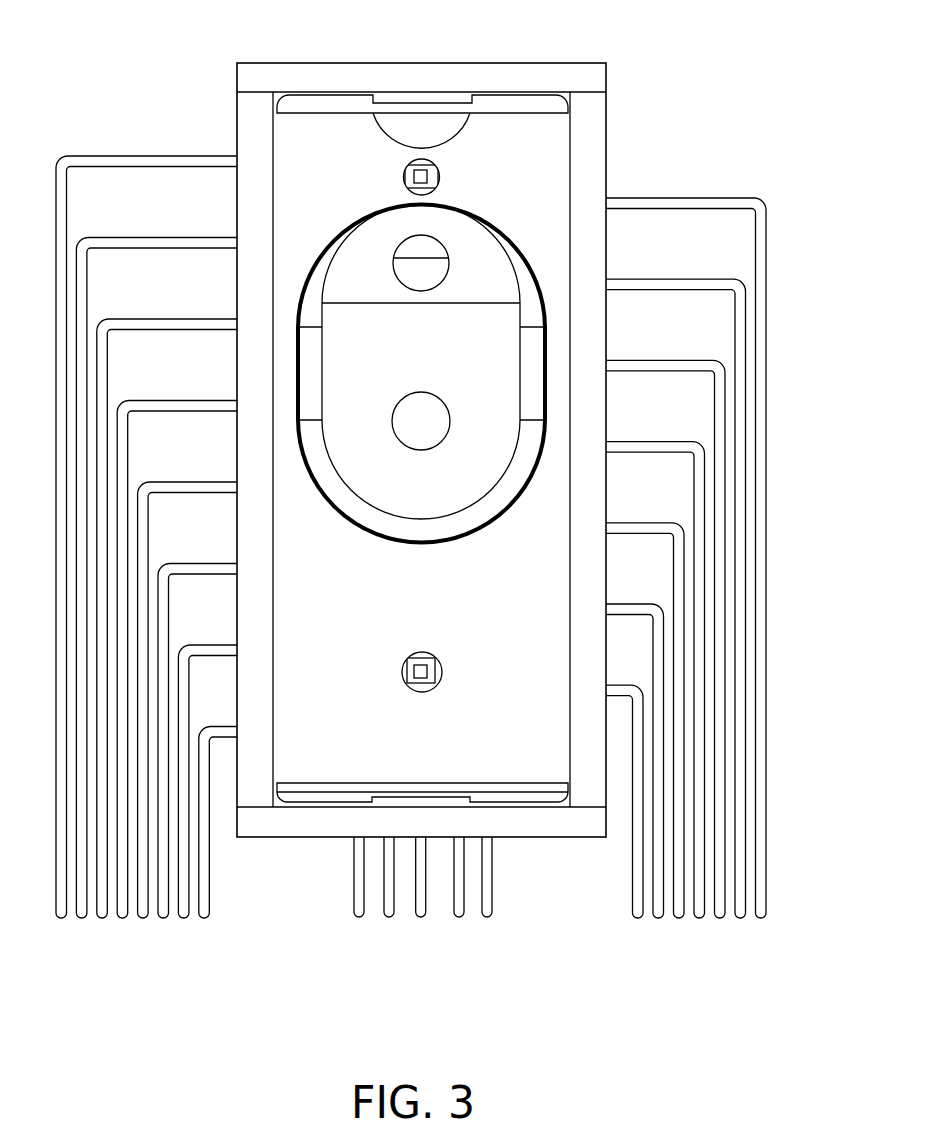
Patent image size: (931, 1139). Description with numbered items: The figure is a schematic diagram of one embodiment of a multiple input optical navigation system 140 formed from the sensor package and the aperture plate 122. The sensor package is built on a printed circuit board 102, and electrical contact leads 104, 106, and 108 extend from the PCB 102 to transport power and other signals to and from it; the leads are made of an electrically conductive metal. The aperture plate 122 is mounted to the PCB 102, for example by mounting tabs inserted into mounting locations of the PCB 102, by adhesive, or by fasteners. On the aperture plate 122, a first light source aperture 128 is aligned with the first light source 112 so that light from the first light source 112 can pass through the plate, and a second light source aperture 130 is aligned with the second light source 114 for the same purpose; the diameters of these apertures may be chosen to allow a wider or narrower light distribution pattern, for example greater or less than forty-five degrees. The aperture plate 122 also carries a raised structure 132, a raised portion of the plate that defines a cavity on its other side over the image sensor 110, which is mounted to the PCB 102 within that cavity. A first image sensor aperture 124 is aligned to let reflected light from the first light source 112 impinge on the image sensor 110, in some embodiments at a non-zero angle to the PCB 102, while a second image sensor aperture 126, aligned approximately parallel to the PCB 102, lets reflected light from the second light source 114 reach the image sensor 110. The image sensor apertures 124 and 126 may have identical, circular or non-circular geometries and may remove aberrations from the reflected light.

The printed circuit board 102 is at (598, 62).
The electrical contact lead 104 is at (97, 139).
The electrical contact lead 106 is at (755, 179).
The electrical contact lead 108 is at (335, 886).
The image sensor 110 is at (418, 353).
The first light source 112 is at (429, 172).
The second light source 114 is at (433, 639).
The aperture plate 122 is at (570, 170).
The first image sensor aperture 124 is at (403, 288).
The second image sensor aperture 126 is at (400, 436).
The first light source aperture 128 is at (453, 173).
The second light source aperture 130 is at (411, 648).
The raised structure 132 is at (478, 527).
The multiple input optical navigation system 140 is at (184, 60).